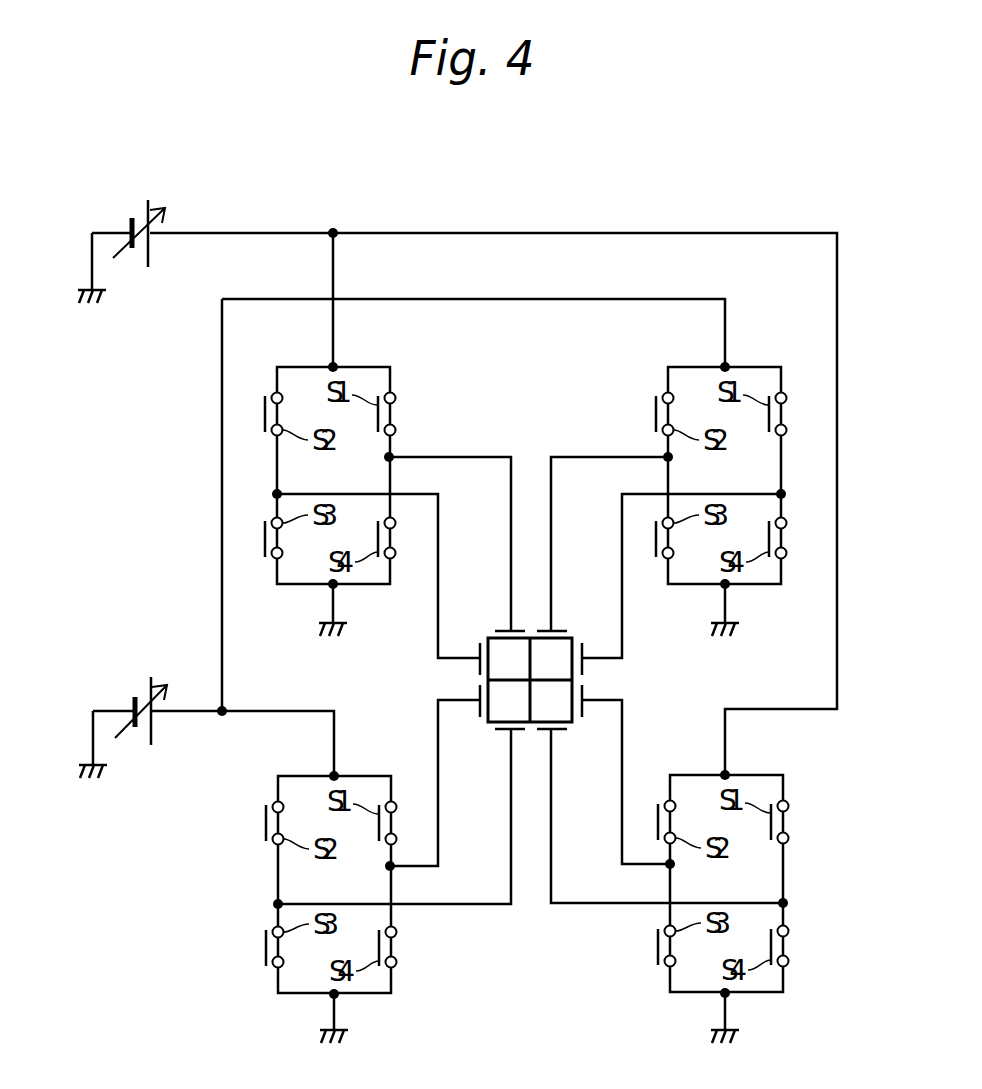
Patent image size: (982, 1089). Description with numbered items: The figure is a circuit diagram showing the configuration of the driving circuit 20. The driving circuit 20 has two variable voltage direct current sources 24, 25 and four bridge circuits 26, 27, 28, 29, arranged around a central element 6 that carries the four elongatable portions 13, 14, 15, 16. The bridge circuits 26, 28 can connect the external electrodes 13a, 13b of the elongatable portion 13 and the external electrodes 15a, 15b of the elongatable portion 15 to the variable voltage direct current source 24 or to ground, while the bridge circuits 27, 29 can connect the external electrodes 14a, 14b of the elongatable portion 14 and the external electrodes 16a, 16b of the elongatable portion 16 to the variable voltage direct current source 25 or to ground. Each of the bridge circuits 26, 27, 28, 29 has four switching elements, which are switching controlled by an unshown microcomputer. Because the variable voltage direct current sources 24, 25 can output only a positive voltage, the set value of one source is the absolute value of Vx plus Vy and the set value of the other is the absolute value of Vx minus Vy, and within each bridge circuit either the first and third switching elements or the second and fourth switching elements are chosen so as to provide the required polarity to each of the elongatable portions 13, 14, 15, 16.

The piezoelectric element 6 is at (539, 604).
The elongatable portion 13 is at (605, 615).
The external electrode 13a is at (582, 655).
The external electrode 13b is at (555, 628).
The elongatable portion 14 is at (456, 615).
The external electrode 14a is at (507, 628).
The external electrode 14b is at (479, 655).
The elongatable portion 15 is at (456, 743).
The external electrode 15a is at (479, 710).
The external electrode 15b is at (505, 733).
The elongatable portion 16 is at (605, 743).
The external electrode 16a is at (557, 733).
The external electrode 16b is at (583, 710).
The driving circuit 20 is at (488, 218).
The variable voltage direct current source 24 is at (131, 219).
The variable voltage direct current source 25 is at (133, 698).
The bridge circuit 26 is at (643, 380).
The bridge circuit 27 is at (416, 382).
The bridge circuit 28 is at (412, 989).
The bridge circuit 29 is at (649, 989).